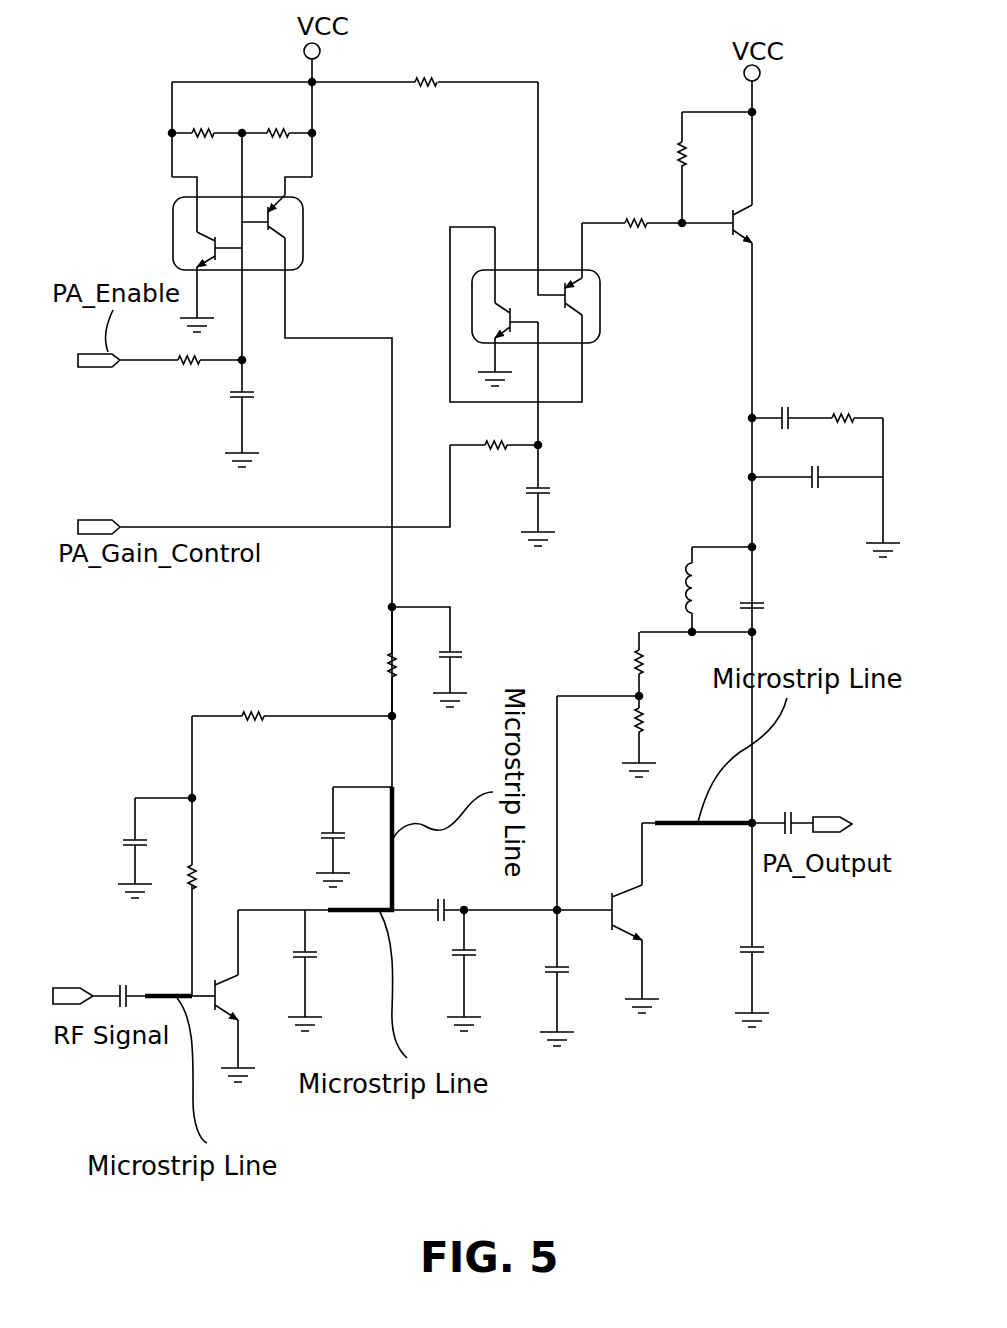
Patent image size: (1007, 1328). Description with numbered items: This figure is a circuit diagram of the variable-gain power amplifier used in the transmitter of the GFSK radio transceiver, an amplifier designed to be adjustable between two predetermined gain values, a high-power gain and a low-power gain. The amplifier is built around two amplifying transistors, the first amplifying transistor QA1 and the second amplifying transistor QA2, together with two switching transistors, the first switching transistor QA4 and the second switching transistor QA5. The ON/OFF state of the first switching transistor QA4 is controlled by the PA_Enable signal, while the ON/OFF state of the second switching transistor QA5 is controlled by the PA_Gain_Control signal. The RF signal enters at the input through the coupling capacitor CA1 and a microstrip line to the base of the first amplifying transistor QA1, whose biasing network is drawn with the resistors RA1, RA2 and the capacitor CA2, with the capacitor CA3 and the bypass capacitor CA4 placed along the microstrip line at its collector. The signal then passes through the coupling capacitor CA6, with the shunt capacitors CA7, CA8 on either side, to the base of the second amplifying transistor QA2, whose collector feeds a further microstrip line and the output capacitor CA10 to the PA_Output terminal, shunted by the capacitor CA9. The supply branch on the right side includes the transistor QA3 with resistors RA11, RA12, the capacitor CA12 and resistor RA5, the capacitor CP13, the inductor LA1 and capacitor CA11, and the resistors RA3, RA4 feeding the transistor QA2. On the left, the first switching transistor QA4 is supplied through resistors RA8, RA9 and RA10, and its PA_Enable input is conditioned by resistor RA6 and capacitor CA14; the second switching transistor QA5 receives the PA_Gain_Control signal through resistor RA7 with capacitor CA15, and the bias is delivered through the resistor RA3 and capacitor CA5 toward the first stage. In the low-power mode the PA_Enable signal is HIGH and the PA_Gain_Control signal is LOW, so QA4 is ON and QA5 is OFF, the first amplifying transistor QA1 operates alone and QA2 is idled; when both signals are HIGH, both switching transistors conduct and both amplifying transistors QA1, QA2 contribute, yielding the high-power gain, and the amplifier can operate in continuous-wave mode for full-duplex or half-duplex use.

The resistor RA8 is at (207, 119).
The resistor RA9 is at (277, 119).
The resistor RA10 is at (432, 65).
The first switching transistor QA4 is at (267, 232).
The resistor RA6 is at (186, 377).
The capacitor CA14 is at (275, 413).
The second switching transistor QA5 is at (565, 306).
The resistor RA7 is at (494, 462).
The capacitor CA15 is at (572, 495).
The resistor RA11 is at (649, 156).
The resistor RA12 is at (622, 207).
The transistor QA3 is at (769, 177).
The capacitor CA12 is at (792, 402).
The resistor RA5 is at (850, 434).
The capacitor CP13 is at (817, 492).
The inductor LA1 is at (690, 589).
The capacitor CA11 is at (789, 604).
The resistor RA3 is at (486, 661).
The resistor RA4 is at (661, 736).
The capacitor CA10 is at (790, 804).
The second amplifying transistor QA2 is at (621, 912).
The capacitor CA9 is at (726, 983).
The capacitor CA8 is at (585, 1000).
The capacitor CA5 is at (476, 673).
The resistor RA2 is at (292, 699).
The capacitor CA2 is at (129, 848).
The resistor RA1 is at (222, 878).
The capacitor CA4 is at (327, 837).
The capacitor CA3 is at (332, 970).
The capacitor CA6 is at (491, 898).
The capacitor CA7 is at (490, 970).
The capacitor CA1 is at (120, 977).
The first amplifying transistor QA1 is at (252, 997).